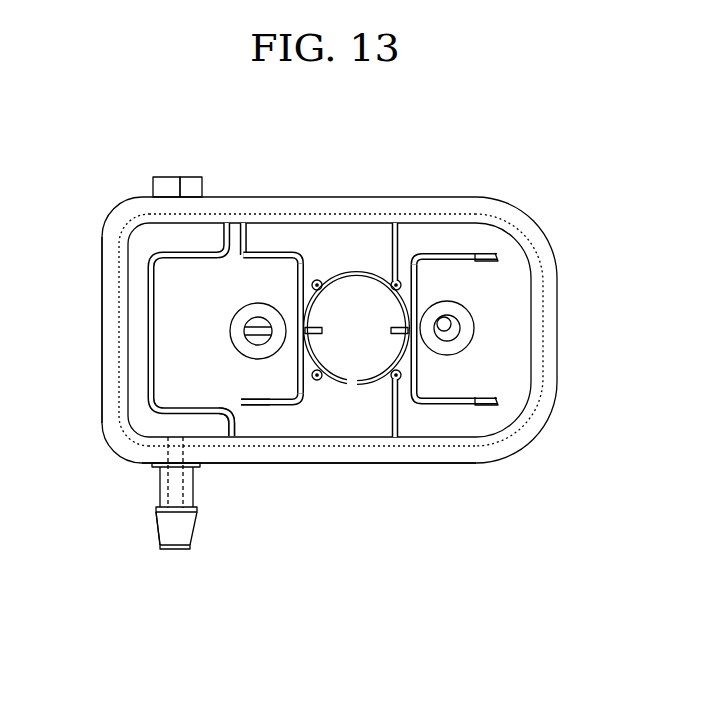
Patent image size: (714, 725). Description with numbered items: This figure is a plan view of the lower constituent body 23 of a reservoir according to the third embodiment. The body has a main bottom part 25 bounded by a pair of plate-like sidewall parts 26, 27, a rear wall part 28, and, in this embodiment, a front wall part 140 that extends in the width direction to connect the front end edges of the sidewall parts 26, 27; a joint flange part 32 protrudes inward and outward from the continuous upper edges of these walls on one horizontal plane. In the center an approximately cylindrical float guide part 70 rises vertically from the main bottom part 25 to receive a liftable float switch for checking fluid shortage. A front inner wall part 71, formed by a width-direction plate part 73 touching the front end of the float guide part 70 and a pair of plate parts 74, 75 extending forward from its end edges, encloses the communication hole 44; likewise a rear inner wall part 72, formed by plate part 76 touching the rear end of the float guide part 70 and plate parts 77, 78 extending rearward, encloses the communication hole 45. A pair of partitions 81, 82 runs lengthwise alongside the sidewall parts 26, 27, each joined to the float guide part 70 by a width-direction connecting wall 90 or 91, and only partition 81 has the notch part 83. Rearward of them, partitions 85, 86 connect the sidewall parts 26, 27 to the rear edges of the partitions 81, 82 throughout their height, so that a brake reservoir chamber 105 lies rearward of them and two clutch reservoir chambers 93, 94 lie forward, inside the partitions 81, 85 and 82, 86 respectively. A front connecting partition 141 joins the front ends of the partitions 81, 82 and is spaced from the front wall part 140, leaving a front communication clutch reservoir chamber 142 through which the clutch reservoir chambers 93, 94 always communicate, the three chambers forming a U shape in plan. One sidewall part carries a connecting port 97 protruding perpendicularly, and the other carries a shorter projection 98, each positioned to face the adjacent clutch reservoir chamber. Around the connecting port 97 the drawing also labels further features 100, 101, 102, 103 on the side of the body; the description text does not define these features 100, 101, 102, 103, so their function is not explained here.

The lower constituent body 23 is at (547, 203).
The main bottom part 25 is at (487, 432).
The sidewall part 26 is at (357, 444).
The sidewall part 27 is at (380, 213).
The rear wall part 28 is at (543, 315).
The joint flange part 32 is at (107, 388).
The communication hole 44 is at (237, 330).
The communication hole 45 is at (455, 325).
The float guide part 70 is at (362, 392).
The front inner wall part 71 is at (283, 270).
The rear inner wall part 72 is at (487, 253).
The plate part 73 is at (297, 373).
The plate part 74 is at (247, 388).
The plate part 75 is at (250, 257).
The plate part 76 is at (418, 372).
The plate part 77 is at (490, 408).
The plate part 78 is at (453, 253).
The partition 81 is at (177, 413).
The partition 82 is at (158, 250).
The notch part 83 is at (171, 176).
The partition 85 is at (237, 423).
The partition 86 is at (213, 235).
The connecting wall 90 is at (396, 412).
The connecting wall 91 is at (402, 242).
The clutch reservoir chamber 93 is at (213, 423).
The clutch reservoir chamber 94 is at (195, 251).
The connecting port 97 is at (196, 532).
The projection 98 is at (195, 176).
The nozzle flange 100 is at (203, 465).
The nozzle stem 101 is at (196, 492).
The nozzle collar 102 is at (157, 537).
The nozzle bore 103 is at (172, 525).
The brake reservoir chamber 105 is at (300, 237).
The front wall part 140 is at (120, 307).
The front connecting partition 141 is at (148, 347).
The front communication clutch reservoir chamber 142 is at (133, 365).